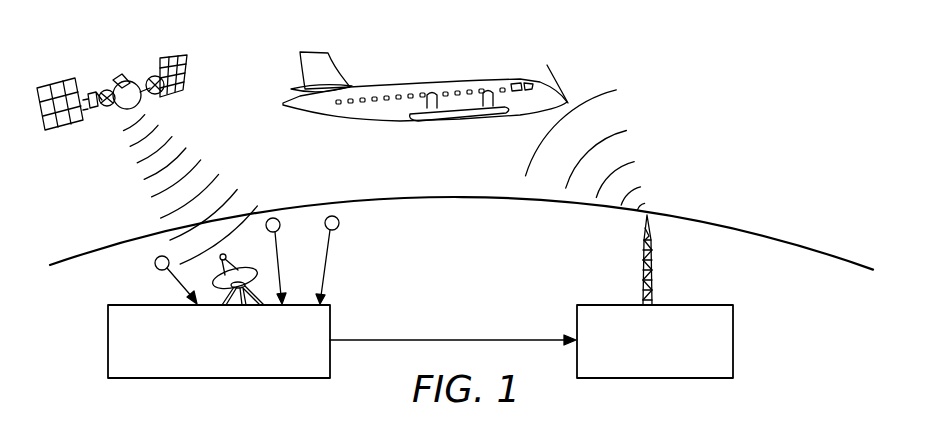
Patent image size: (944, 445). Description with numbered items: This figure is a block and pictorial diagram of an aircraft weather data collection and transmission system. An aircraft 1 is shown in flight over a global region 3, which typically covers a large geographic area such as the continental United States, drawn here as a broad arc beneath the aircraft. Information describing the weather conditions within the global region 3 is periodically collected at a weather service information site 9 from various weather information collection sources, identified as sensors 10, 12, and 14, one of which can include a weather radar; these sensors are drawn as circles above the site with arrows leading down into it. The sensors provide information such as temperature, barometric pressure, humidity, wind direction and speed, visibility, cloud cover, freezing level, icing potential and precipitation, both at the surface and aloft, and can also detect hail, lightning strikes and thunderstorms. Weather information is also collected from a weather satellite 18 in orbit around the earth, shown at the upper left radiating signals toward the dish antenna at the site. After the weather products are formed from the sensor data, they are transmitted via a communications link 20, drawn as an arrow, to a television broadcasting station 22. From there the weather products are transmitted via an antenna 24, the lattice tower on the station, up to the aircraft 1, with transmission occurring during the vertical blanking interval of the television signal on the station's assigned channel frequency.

The aircraft 1 is at (428, 82).
The global region 3 is at (444, 197).
The weather service information site 9 is at (331, 316).
The sensor 10 is at (155, 264).
The sensor 12 is at (281, 226).
The sensor 14 is at (340, 225).
The weather satellite 18 is at (113, 78).
The communications link 20 is at (440, 338).
The television broadcasting station 22 is at (733, 330).
The antenna 24 is at (653, 278).